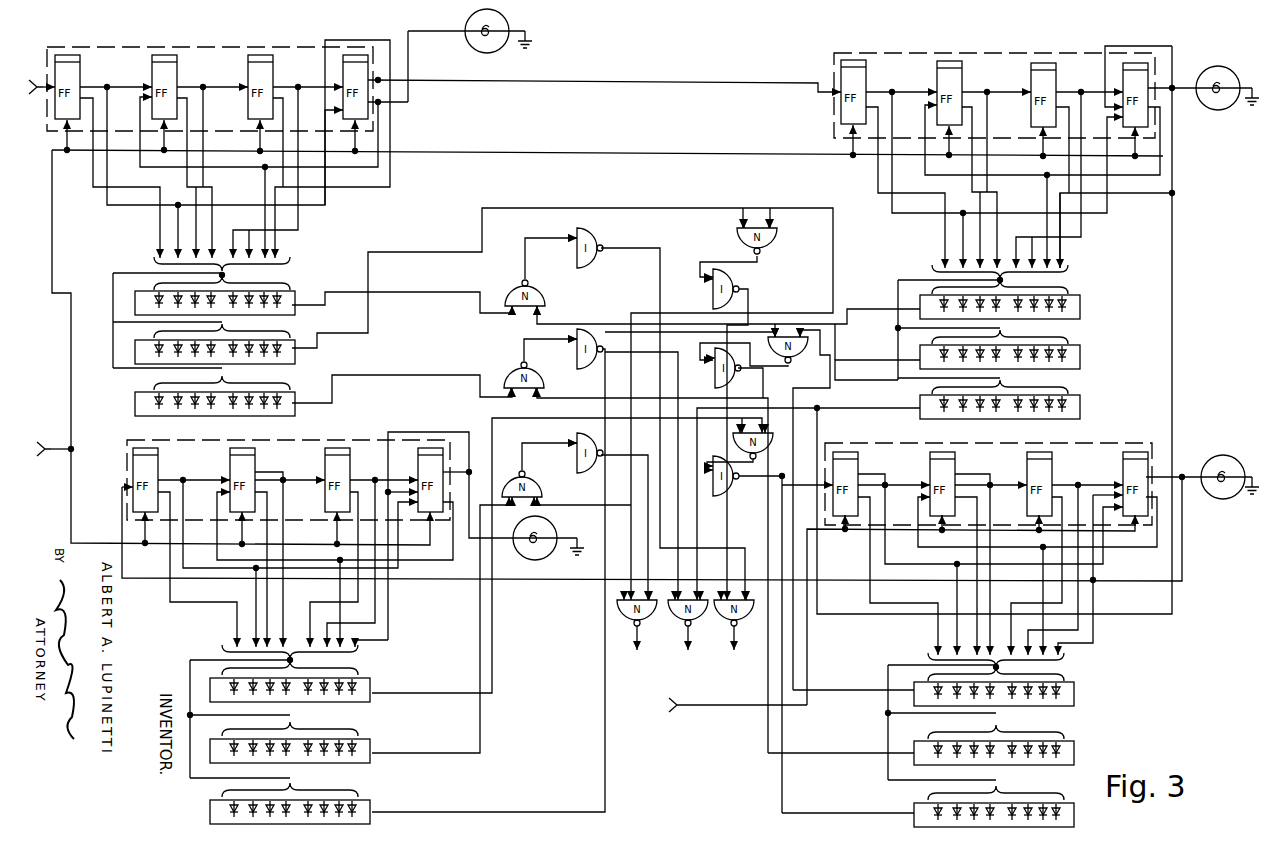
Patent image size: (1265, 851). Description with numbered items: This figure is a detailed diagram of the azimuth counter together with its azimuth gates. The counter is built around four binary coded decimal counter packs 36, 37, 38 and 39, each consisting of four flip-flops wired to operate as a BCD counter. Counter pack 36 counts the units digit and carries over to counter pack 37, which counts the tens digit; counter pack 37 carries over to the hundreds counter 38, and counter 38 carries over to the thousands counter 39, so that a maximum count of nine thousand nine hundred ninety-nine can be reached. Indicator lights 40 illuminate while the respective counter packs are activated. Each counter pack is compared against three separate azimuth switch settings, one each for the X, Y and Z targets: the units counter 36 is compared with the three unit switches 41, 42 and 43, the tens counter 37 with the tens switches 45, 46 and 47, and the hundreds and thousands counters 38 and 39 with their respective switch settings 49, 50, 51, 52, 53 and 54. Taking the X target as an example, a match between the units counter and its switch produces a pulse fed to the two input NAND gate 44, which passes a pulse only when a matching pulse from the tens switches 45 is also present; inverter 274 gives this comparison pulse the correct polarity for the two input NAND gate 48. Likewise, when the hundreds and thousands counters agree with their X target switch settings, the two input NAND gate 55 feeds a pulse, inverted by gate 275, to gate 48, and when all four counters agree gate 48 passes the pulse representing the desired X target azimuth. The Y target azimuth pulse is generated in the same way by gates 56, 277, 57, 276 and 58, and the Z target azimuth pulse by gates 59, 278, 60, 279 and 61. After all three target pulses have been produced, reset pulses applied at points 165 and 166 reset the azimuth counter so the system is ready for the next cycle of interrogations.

The counter pack 36 is at (234, 50).
The counter pack 37 is at (984, 58).
The counter pack 38 is at (882, 452).
The counter pack 39 is at (318, 447).
The indicator lights 40 is at (503, 27).
The unit switch 41 is at (292, 293).
The unit switch 42 is at (285, 344).
The unit switch 43 is at (285, 397).
The two input NAND gate 44 is at (532, 296).
The tens switches 45 is at (1072, 302).
The tens switches 46 is at (1072, 355).
The tens switches 47 is at (1076, 404).
The two input NAND gate 48 is at (726, 618).
The switch setting 49 is at (1072, 695).
The switch setting 50 is at (1072, 752).
The switch setting 51 is at (1072, 815).
The switch setting 52 is at (368, 682).
The switch setting 53 is at (368, 743).
The switch setting 54 is at (368, 805).
The two input NAND gate 55 is at (762, 437).
The gate 56 is at (770, 235).
The gate 57 is at (530, 485).
The gate 58 is at (620, 608).
The gate 59 is at (526, 378).
The gate 60 is at (792, 340).
The gate 61 is at (682, 616).
The reset point 165 is at (70, 447).
The reset point 166 is at (738, 690).
The inverter gate 274 is at (586, 243).
The inverter gate 275 is at (733, 484).
The inverter gate 276 is at (580, 462).
The inverter gate 277 is at (738, 278).
The inverter gate 278 is at (583, 362).
The inverter gate 279 is at (703, 360).